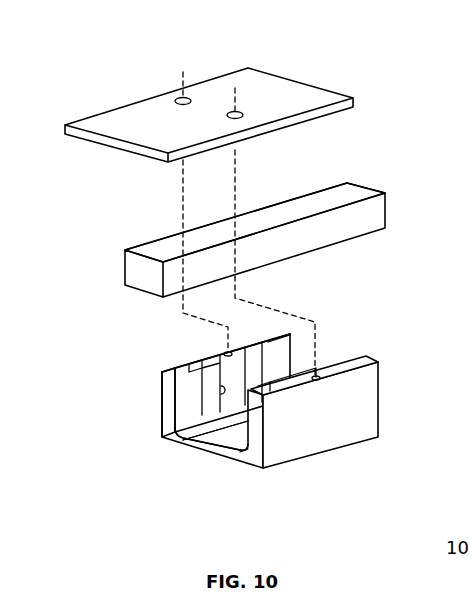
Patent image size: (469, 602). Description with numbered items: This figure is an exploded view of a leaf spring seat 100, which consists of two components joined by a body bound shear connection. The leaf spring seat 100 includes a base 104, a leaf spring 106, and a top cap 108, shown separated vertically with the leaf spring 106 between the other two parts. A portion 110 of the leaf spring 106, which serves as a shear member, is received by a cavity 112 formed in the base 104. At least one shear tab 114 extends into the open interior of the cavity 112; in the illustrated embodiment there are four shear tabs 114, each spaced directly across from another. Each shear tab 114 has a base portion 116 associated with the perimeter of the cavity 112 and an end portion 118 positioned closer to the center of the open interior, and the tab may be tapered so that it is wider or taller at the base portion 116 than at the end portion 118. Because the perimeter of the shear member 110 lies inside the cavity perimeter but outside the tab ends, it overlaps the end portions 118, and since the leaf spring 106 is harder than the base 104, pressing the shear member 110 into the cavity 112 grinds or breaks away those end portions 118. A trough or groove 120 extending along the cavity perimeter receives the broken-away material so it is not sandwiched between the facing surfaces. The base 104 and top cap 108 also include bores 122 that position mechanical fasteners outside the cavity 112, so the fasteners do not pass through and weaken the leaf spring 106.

The leaf spring seat 100 is at (140, 478).
The base 104 is at (360, 446).
The leaf spring 106 is at (375, 181).
The top cap 108 is at (313, 76).
The portion of the leaf spring (shear member) 110 is at (160, 233).
The cavity 112 is at (214, 438).
The shear tab 114 is at (272, 337).
The base portion 116 is at (200, 388).
The end portion 118 is at (205, 420).
The trough or groove 120 is at (176, 438).
The bores 122 is at (180, 98).